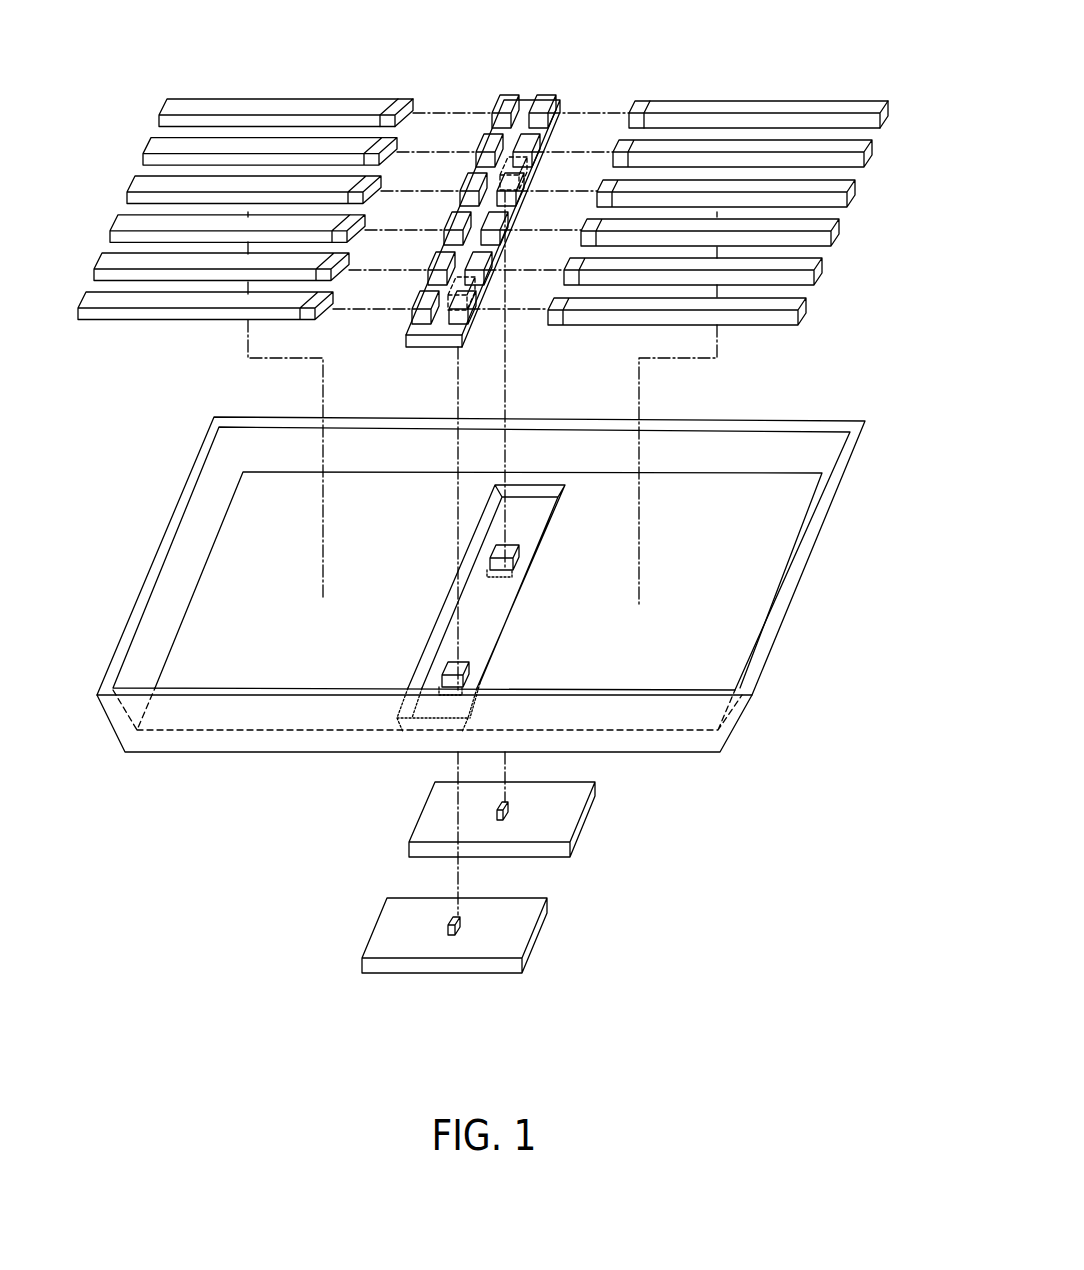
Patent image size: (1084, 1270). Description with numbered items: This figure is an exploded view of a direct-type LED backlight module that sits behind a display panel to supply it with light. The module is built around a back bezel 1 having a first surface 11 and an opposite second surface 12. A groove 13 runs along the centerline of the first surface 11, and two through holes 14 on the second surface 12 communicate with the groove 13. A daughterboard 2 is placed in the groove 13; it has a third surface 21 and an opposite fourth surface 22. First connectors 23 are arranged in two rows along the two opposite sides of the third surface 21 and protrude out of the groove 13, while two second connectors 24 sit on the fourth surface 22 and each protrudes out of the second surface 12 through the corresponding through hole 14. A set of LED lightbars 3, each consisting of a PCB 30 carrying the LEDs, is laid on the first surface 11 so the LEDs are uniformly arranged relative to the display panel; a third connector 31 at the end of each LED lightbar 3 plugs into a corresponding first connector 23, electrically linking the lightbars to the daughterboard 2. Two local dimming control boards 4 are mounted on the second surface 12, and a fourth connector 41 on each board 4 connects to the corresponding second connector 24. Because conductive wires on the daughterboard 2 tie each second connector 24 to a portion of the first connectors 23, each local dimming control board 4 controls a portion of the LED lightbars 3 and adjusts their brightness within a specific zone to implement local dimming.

The back bezel 1 is at (813, 552).
The first surface 11 is at (693, 640).
The second surface 12 is at (683, 753).
The groove 13 is at (450, 638).
The through holes 14 is at (445, 673).
The daughterboard 2 is at (523, 118).
The third surface 21 is at (522, 118).
The fourth surface 22 is at (425, 350).
The first connectors 23 is at (503, 107).
The second connectors 24 is at (523, 177).
The LED lightbars 3 is at (232, 100).
The PCB 30 is at (305, 108).
The third connector 31 is at (408, 108).
The local dimming control boards 4 is at (572, 805).
The fourth connector 41 is at (510, 810).